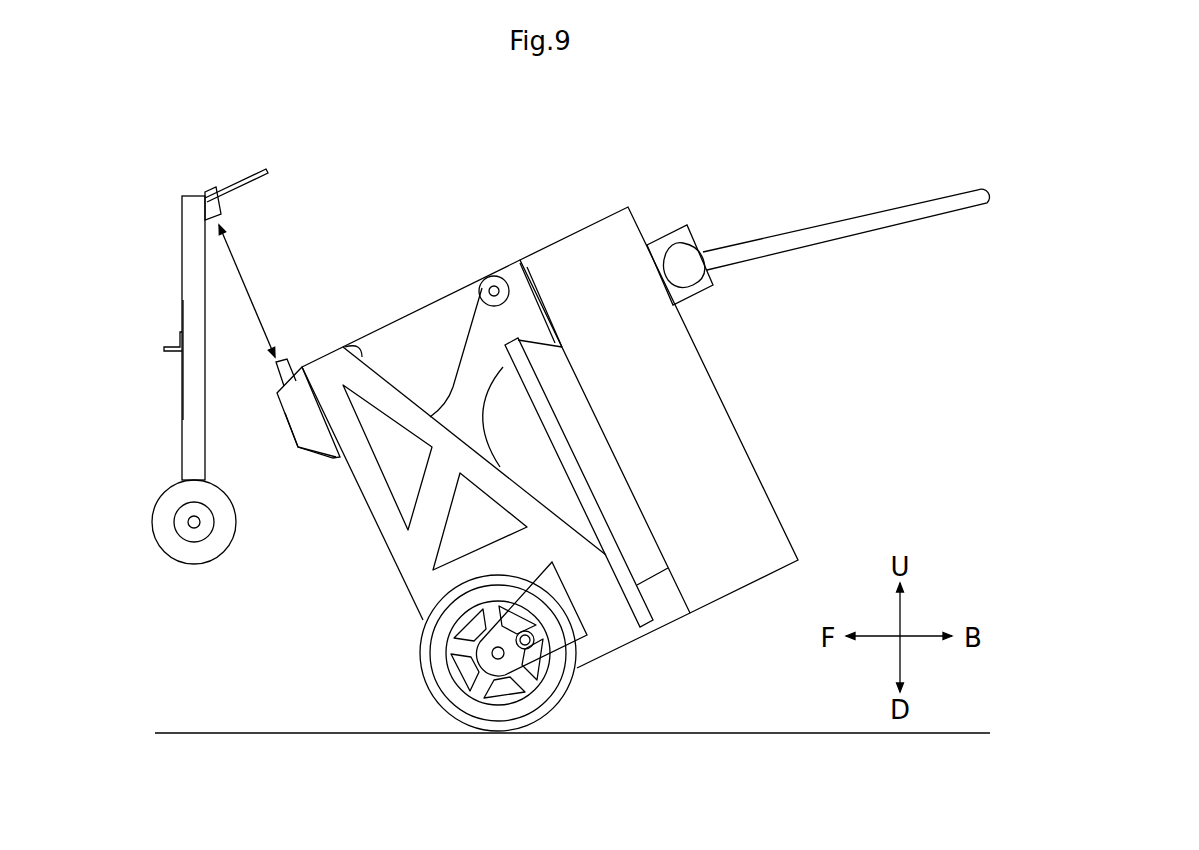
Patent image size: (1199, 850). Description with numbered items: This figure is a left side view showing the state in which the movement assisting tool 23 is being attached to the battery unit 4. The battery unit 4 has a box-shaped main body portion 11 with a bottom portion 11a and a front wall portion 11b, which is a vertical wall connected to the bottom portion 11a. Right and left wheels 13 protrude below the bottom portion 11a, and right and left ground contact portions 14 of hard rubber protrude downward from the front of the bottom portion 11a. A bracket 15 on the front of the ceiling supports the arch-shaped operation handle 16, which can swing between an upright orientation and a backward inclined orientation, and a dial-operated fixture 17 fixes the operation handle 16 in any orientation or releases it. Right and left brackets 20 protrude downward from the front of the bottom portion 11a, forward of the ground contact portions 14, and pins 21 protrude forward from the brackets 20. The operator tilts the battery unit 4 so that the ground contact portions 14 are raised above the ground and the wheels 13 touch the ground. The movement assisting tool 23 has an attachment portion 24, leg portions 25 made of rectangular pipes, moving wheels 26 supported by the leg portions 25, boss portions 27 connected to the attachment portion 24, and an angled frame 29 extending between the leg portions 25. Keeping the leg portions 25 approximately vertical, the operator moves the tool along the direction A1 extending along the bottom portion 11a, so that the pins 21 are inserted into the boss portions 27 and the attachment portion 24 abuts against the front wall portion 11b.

The battery unit 4 is at (735, 383).
The main body portion 11 is at (470, 442).
The bottom portion 11a is at (378, 542).
The front wall portion 11b is at (407, 302).
The wheels 13 is at (576, 690).
The ground contact portions 14 is at (302, 452).
The bracket 15 is at (697, 243).
The operation handle 16 is at (873, 222).
The dial-operated fixture 17 is at (681, 252).
The brackets 20 is at (296, 402).
The pins 21 is at (297, 362).
The movement assisting tool 23 is at (181, 255).
The attachment portion 24 is at (262, 178).
The leg portions 25 is at (192, 412).
The moving wheels 26 is at (192, 556).
The boss portions 27 is at (205, 195).
The angled frame 29 is at (168, 342).
The direction A1 is at (238, 300).